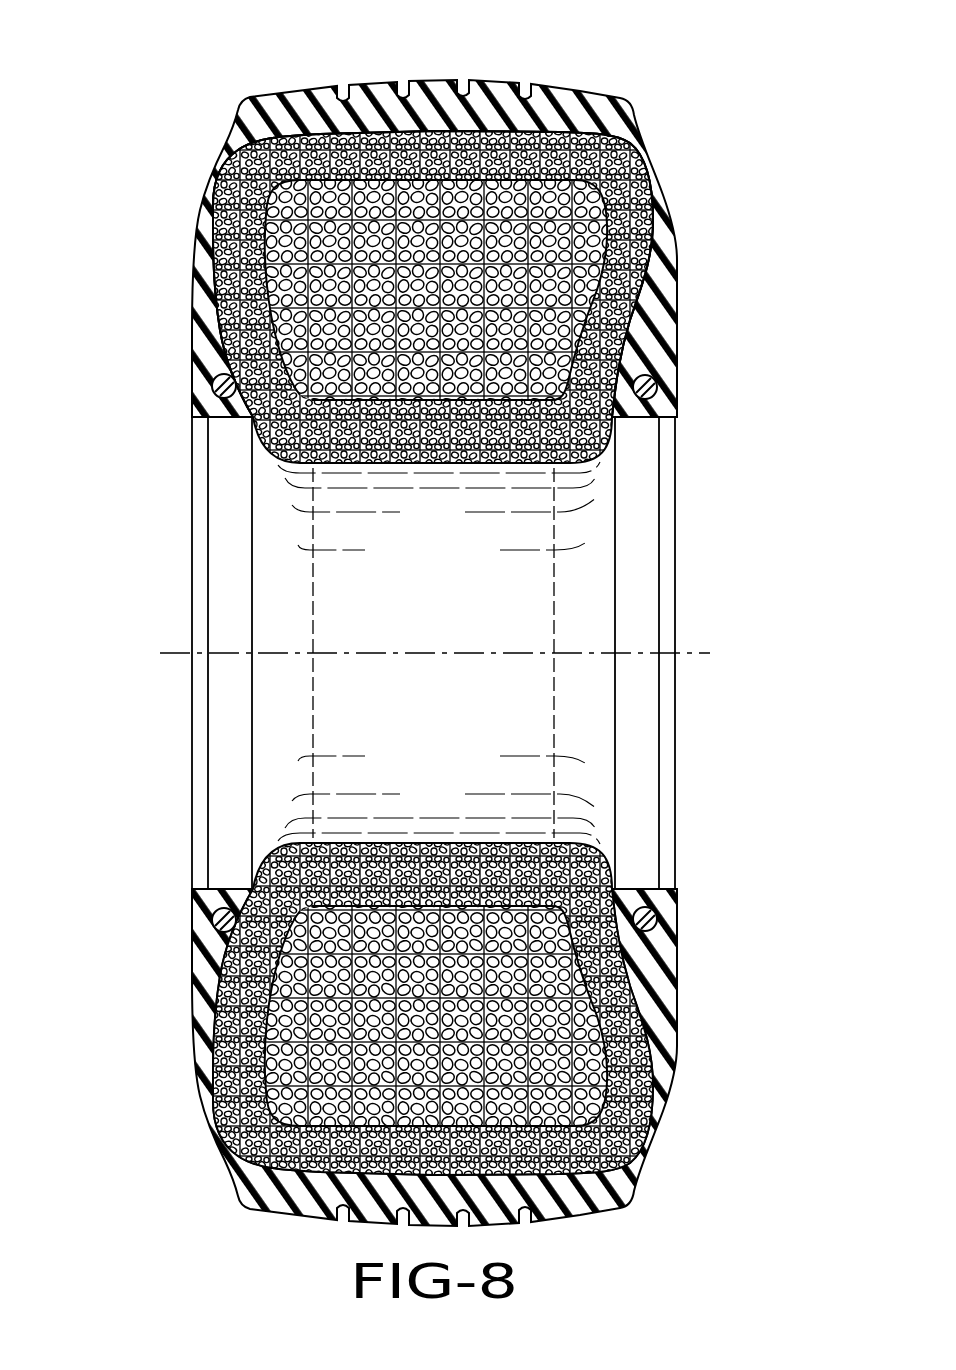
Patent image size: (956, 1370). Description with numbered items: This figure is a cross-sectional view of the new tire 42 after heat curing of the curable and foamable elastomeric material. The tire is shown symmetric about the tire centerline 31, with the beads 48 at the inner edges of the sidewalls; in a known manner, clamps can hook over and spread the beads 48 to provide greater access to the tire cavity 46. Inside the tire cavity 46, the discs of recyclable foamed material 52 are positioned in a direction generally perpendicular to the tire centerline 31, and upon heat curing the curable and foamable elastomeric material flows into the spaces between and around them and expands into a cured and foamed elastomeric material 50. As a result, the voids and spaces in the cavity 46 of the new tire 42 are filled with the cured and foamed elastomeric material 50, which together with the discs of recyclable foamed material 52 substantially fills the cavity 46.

The new tire 42 is at (261, 88).
The tire cavity 46 is at (618, 163).
The beads 48 is at (215, 391).
The cured and foamed elastomeric material 50 is at (243, 283).
The discs of recyclable foamed material 52 is at (553, 254).
The tire centerline 31 is at (372, 653).